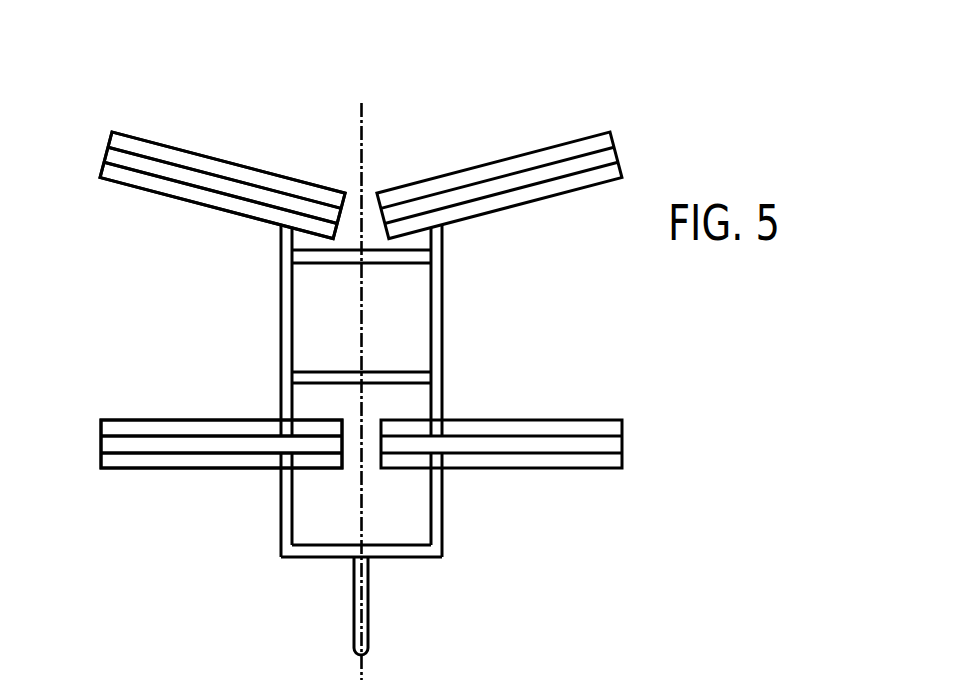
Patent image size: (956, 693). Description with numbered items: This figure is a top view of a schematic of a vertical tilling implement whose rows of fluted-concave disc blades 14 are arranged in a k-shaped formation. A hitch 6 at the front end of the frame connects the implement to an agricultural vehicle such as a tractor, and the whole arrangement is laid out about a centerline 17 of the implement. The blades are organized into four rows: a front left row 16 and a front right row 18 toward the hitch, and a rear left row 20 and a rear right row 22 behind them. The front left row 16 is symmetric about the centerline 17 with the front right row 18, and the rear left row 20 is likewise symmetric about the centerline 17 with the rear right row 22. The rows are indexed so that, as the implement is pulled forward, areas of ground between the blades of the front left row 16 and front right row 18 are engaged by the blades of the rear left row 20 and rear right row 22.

The hitch 6 is at (368, 618).
The fluted-concave disc blades 14 is at (138, 162).
The front left row 16 is at (584, 494).
The centerline 17 is at (362, 140).
The front right row 18 is at (140, 494).
The rear left row 20 is at (559, 228).
The rear right row 22 is at (165, 228).